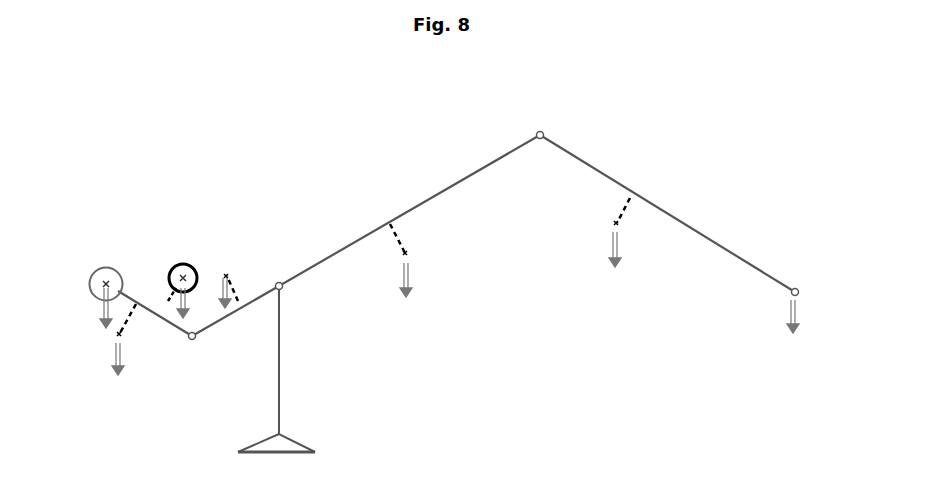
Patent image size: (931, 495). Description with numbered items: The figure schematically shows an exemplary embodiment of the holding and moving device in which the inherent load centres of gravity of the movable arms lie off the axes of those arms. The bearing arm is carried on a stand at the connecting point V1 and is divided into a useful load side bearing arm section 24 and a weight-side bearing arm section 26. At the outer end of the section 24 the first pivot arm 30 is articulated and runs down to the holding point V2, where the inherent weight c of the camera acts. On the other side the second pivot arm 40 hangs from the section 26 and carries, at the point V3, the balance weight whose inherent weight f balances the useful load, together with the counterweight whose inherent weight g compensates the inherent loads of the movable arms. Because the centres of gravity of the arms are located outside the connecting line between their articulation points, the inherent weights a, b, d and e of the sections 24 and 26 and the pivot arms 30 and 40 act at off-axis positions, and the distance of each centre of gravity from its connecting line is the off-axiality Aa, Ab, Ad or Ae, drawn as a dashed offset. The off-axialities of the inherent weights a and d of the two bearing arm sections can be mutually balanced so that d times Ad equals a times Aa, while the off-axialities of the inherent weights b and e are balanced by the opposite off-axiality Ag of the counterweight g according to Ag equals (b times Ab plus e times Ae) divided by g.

The useful load side bearing arm section 24 is at (418, 205).
The weight-side bearing arm section 26 is at (228, 320).
The first pivot arm 30 is at (673, 212).
The second pivot arm 40 is at (175, 328).
The connecting point V1 is at (283, 288).
The holding point V2 is at (787, 295).
The end vertex V3 is at (103, 279).
The inherent weight of the useful load side bearing arm section a is at (405, 294).
The inherent weight of the first pivot arm b is at (615, 267).
The inherent weight of the camera c is at (793, 331).
The inherent weight of the weight-side bearing arm section d is at (219, 291).
The inherent weight of the second pivot arm e is at (118, 372).
The inherent weight of the balance weight for balancing the useful load f is at (99, 312).
The inherent weight of the balance weight for compensating the movable arms g is at (187, 297).
The off-axiality of inherent weight a Aa is at (408, 240).
The off-axiality of inherent weight b Ab is at (609, 209).
The off-axiality of inherent weight d Ad is at (243, 284).
The off-axiality of inherent weight e Ae is at (133, 326).
The off-axiality of counterweight g Ag is at (159, 295).